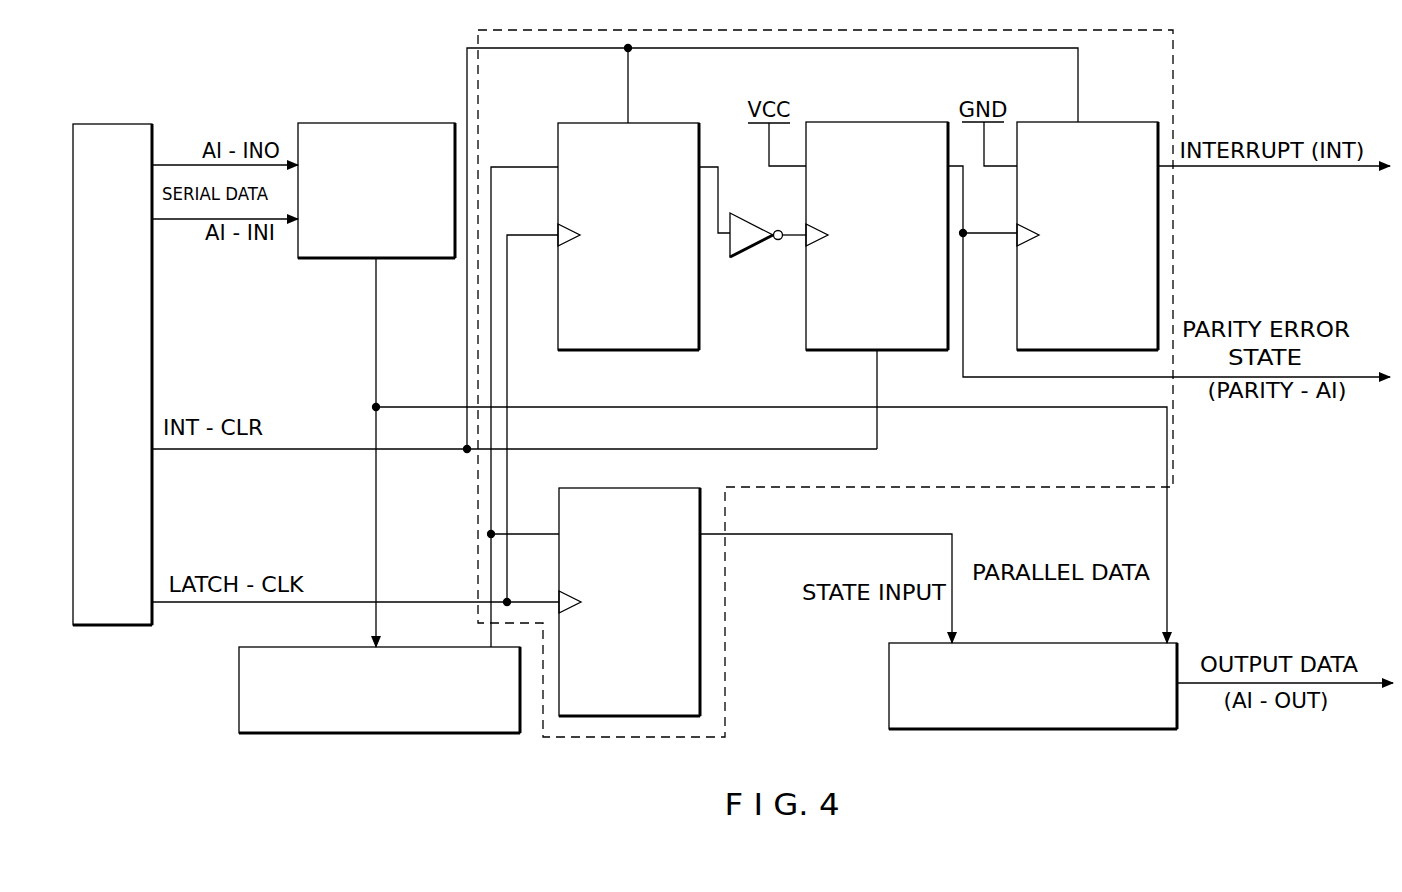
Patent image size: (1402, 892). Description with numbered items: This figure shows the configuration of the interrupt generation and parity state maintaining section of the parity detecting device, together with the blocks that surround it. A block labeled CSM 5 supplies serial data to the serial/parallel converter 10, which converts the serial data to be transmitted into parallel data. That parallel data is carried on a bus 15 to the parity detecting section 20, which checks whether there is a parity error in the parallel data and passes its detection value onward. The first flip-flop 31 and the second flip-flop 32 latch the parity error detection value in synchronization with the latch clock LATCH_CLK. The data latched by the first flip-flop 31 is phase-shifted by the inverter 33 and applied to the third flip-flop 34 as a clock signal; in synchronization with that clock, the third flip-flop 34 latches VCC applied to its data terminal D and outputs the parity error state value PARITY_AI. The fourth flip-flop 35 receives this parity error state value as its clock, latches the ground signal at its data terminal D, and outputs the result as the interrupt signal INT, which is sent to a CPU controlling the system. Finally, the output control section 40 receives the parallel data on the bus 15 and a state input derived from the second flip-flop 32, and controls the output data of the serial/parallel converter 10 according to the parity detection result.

The CSM (control state machine) 5 is at (128, 124).
The serial/parallel converter 10 is at (408, 122).
The parallel data bus 15 is at (363, 503).
The parity detecting section 20 is at (239, 670).
The first flip-flop 31 is at (658, 122).
The second flip-flop 32 is at (700, 643).
The inverter 33 is at (760, 244).
The third flip-flop 34 is at (897, 120).
The fourth flip-flop 35 is at (1103, 120).
The output control section 40 is at (889, 715).